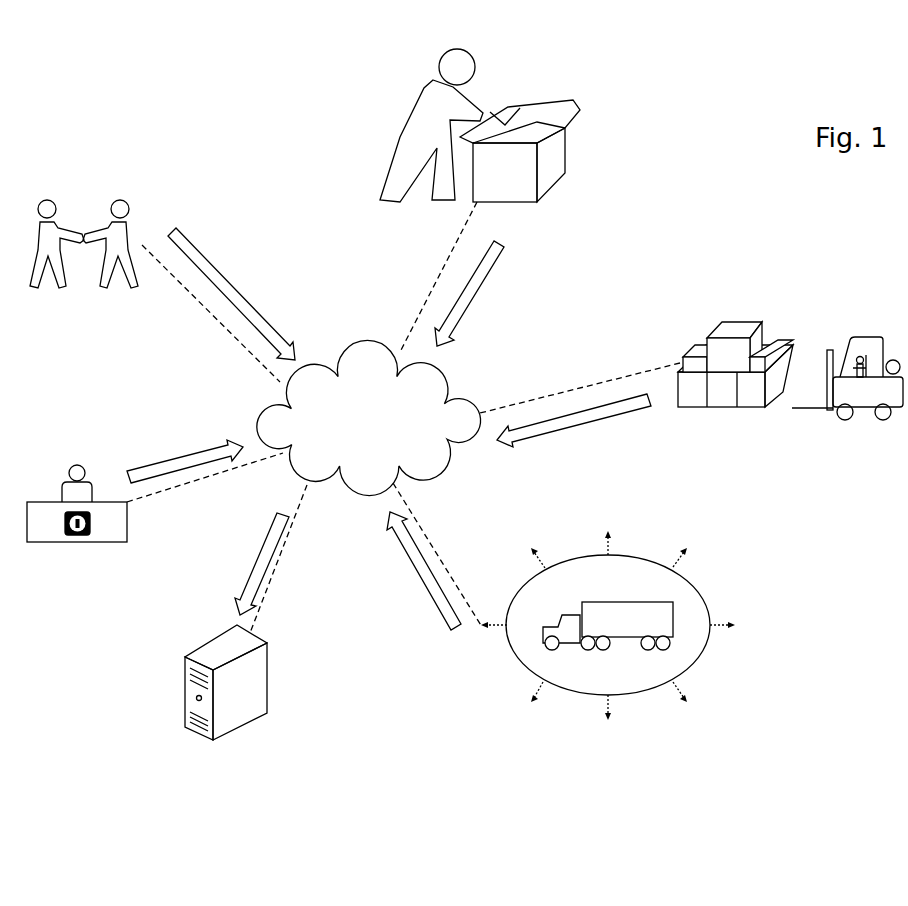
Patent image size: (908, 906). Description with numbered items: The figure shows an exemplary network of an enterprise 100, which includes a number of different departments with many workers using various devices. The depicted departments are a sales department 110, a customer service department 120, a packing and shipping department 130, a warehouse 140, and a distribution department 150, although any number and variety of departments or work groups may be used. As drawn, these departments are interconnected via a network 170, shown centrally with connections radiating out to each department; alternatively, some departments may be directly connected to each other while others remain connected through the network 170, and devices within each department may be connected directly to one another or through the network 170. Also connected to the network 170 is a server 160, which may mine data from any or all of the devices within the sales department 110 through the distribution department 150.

The enterprise 100 is at (240, 70).
The sales department 110 is at (80, 195).
The customer service department 120 is at (62, 482).
The packing and shipping department 130 is at (507, 100).
The warehouse 140 is at (803, 325).
The distribution department 150 is at (707, 592).
The server 160 is at (237, 732).
The network 170 is at (369, 417).